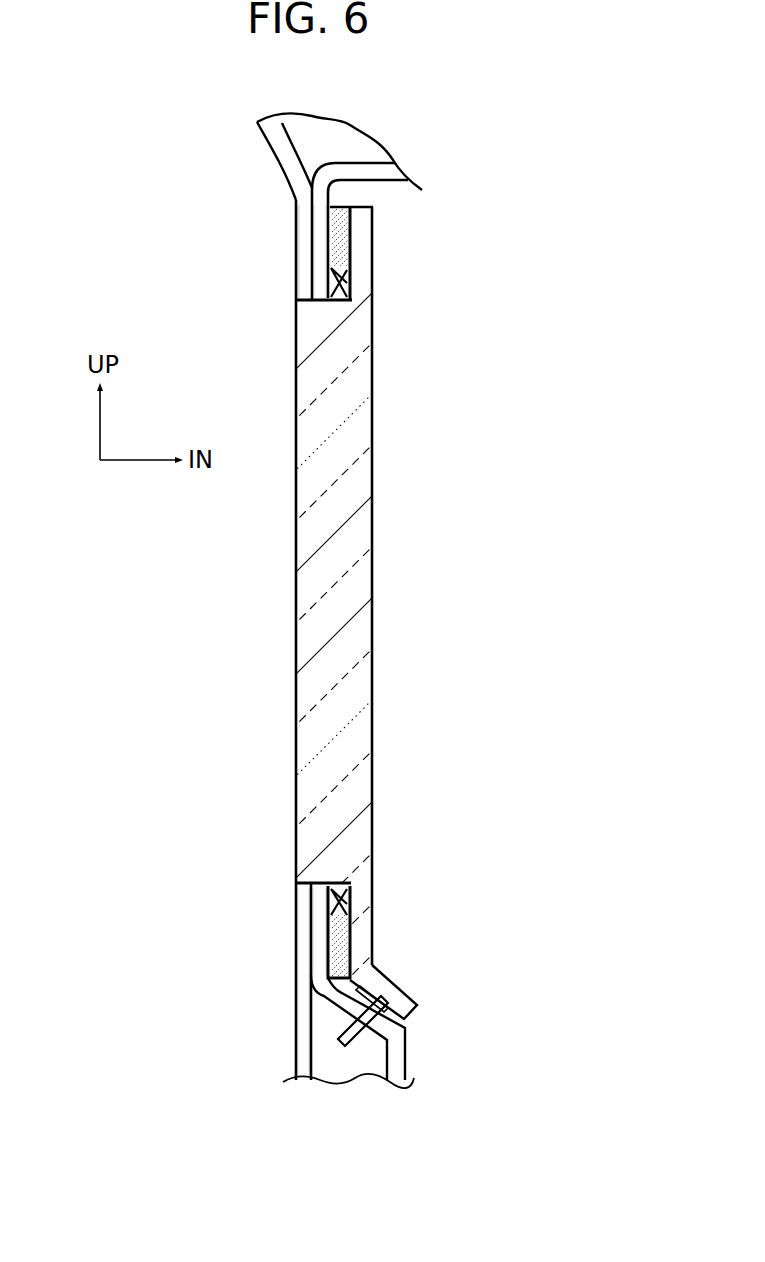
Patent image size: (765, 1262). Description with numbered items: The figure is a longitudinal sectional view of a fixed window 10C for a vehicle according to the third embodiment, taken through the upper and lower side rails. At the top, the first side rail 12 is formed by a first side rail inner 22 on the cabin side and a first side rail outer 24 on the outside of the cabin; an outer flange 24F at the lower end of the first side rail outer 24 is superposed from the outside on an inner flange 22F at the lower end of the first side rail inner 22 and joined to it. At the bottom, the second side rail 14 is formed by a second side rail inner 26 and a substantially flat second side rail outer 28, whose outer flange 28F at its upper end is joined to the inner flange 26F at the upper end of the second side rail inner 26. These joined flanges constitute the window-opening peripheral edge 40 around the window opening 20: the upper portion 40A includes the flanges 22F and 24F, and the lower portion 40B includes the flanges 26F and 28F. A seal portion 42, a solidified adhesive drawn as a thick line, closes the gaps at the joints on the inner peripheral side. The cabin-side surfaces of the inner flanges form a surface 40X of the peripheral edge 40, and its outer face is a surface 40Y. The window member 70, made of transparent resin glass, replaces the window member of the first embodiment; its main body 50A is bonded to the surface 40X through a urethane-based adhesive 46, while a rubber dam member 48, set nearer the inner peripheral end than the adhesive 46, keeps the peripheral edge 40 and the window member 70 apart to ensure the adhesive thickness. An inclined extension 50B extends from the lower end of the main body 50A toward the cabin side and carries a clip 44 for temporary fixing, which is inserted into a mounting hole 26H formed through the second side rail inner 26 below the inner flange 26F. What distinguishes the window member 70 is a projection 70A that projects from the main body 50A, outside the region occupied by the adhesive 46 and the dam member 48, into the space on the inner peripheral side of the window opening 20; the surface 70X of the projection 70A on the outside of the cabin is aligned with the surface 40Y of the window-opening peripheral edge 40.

The fixed window for a vehicle 10C is at (359, 623).
The first side rail 12 is at (280, 204).
The second side rail 14 is at (330, 989).
The window opening 20 is at (310, 876).
The first side rail inner panel 22 is at (375, 204).
The inner flange 22F is at (332, 228).
The first side rail outer panel 24 is at (300, 207).
The outer flange 24F is at (295, 234).
The second side rail inner panel 26 is at (403, 983).
The inner flange 26F is at (330, 947).
The mounting hole 26H is at (381, 1005).
The second side rail outer panel 28 is at (311, 985).
The outer flange 28F is at (296, 963).
The window-opening peripheral edge 40 is at (215, 640).
The upper portion of window-opening peripheral edge 40A is at (255, 238).
The lower portion of window-opening peripheral edge 40B is at (268, 947).
The surface of window-opening peripheral edge on the inside of the vehicle cabin 40X is at (296, 252).
The surface of window-opening peripheral edge on the outside of the vehicle cabin 40Y is at (296, 273).
The seal portion 42 is at (297, 207).
The clip 44 is at (355, 1025).
The adhesive 46 is at (335, 243).
The dam member 48 is at (340, 280).
The main body 50A is at (373, 518).
The inclined extension 50B is at (383, 987).
The window member 70 is at (346, 623).
The projection 70A is at (286, 752).
The surface of projection on the outside of the vehicle cabin 70X is at (295, 687).